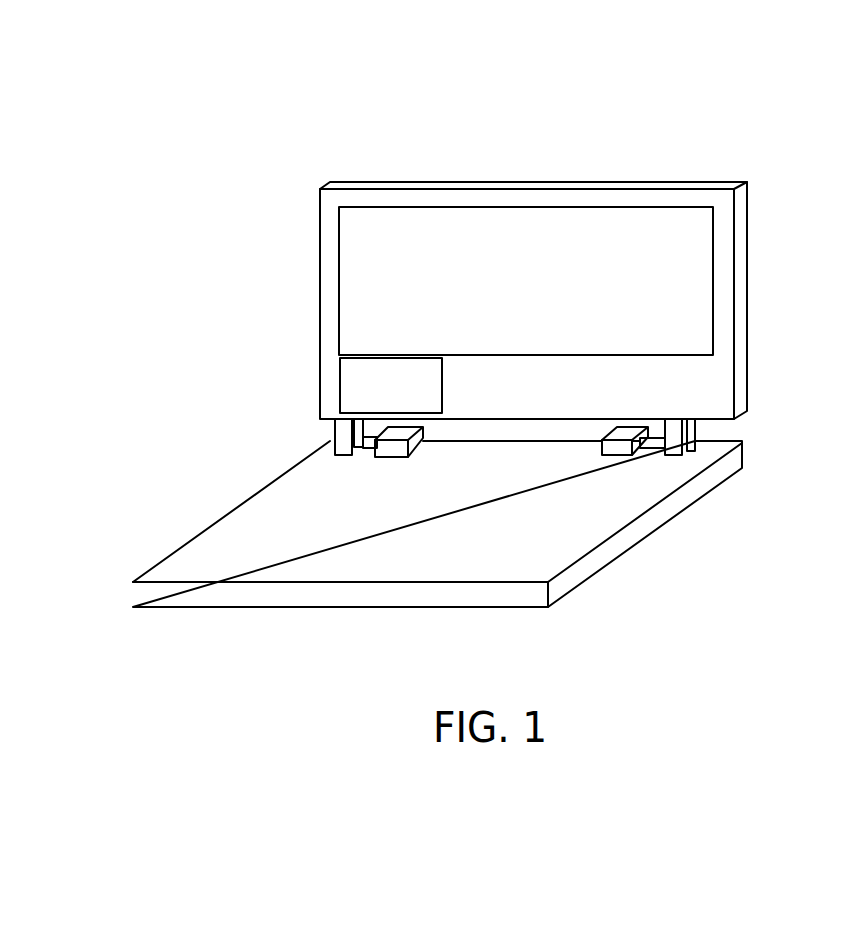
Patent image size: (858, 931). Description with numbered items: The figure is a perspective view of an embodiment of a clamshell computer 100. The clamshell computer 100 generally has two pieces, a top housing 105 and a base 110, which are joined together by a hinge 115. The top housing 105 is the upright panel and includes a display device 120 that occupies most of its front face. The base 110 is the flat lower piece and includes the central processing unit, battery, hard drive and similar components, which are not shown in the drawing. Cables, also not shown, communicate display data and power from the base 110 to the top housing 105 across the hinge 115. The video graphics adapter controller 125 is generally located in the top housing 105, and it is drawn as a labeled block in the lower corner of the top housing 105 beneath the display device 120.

The clamshell computer 100 is at (712, 65).
The top housing 105 is at (752, 294).
The base 110 is at (712, 477).
The hinge 115 is at (697, 433).
The display device 120 is at (539, 286).
The video graphics adapter (VGA) controller 125 is at (411, 409).